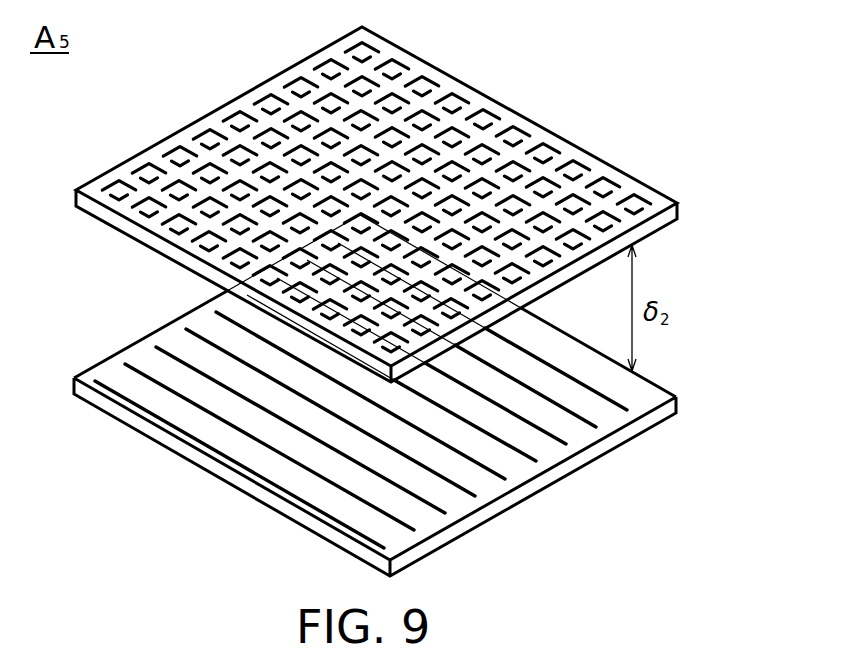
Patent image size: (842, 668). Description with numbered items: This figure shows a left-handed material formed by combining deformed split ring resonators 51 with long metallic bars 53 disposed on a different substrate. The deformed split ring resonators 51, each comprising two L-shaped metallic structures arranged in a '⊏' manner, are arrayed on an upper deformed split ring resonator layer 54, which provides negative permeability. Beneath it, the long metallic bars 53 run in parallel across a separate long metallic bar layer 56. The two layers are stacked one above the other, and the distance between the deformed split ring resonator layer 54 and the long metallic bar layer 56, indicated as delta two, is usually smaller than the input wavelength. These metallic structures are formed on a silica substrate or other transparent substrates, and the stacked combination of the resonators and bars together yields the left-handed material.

The deformed split ring resonator 51 is at (580, 173).
The long metallic bar 53 is at (617, 400).
The deformed split ring resonator layer 54 is at (648, 229).
The long metallic bar layer 56 is at (648, 418).